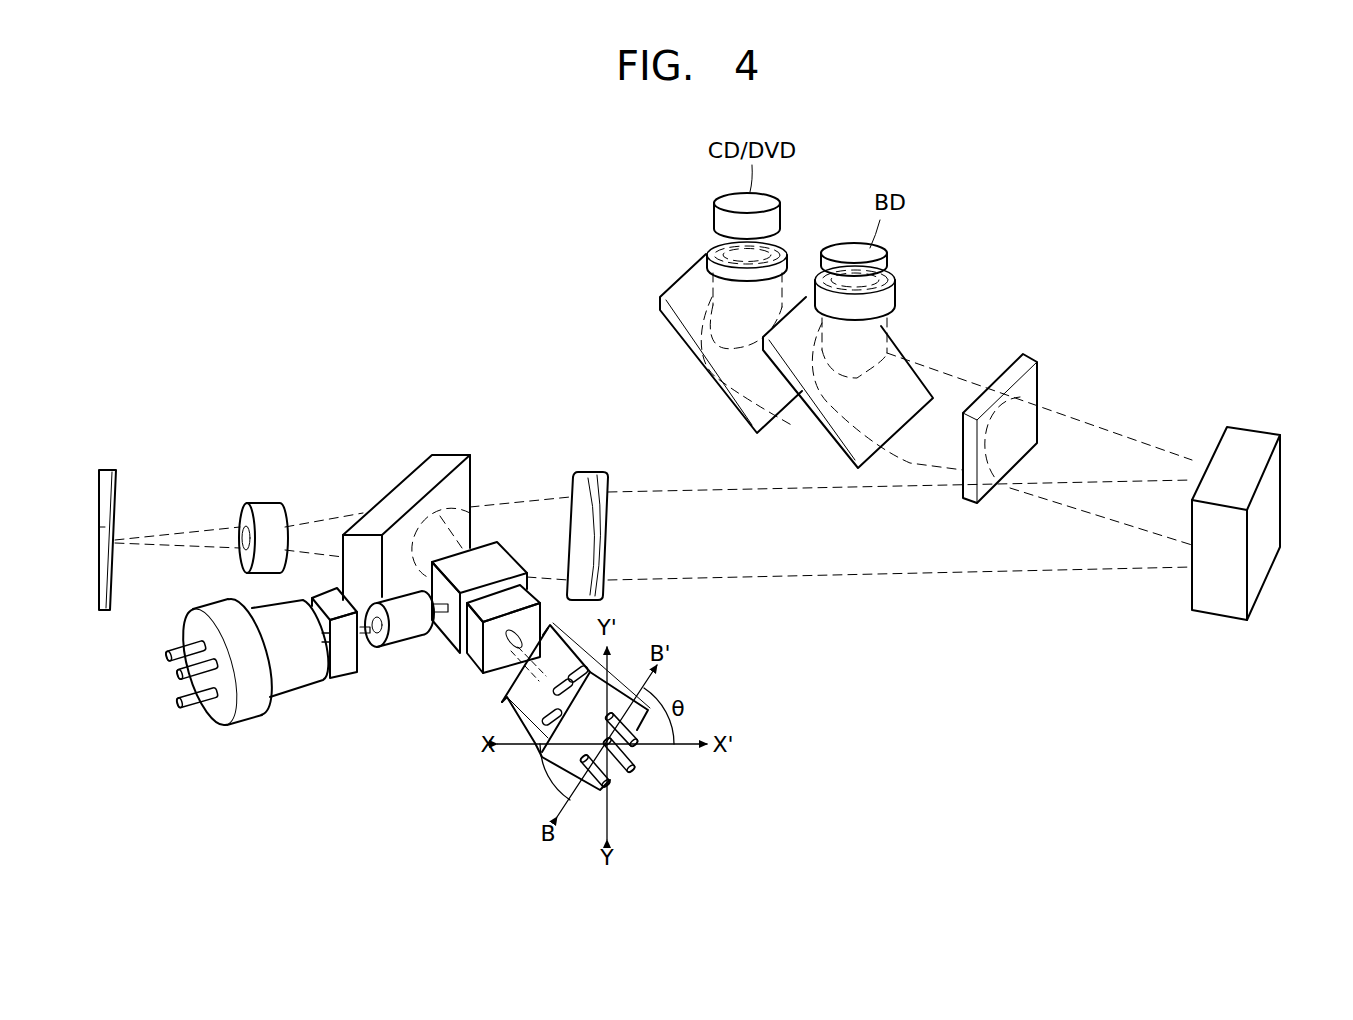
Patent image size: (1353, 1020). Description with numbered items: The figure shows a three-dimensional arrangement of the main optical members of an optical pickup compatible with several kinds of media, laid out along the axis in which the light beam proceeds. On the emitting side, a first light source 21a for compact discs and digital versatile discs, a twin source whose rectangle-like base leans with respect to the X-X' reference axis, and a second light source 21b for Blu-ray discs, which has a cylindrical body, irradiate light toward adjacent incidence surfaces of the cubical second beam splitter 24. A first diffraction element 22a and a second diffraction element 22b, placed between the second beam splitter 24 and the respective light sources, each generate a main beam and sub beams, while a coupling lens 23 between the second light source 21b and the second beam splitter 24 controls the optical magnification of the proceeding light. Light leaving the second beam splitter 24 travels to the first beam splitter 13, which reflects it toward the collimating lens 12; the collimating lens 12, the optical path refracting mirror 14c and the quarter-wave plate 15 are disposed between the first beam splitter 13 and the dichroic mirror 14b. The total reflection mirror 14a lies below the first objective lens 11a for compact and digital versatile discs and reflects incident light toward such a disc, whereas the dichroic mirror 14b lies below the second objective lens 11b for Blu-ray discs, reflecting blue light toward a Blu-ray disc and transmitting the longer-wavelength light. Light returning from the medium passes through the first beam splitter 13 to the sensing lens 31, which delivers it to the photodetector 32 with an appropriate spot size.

The first objective lens 11a is at (787, 248).
The second objective lens 11b is at (893, 290).
The collimating lens 12 is at (587, 478).
The first beam splitter 13 is at (445, 460).
The total reflection mirror 14a is at (680, 337).
The dichroic mirror 14b is at (828, 430).
The optical path refracting mirror 14c is at (1253, 437).
The quarter-wave plate 15 is at (1025, 358).
The first light source 21a is at (525, 772).
The second light source 21b is at (228, 745).
The first diffraction element 22a is at (473, 658).
The second diffraction element 22b is at (347, 676).
The coupling lens 23 is at (387, 642).
The second beam splitter 24 is at (448, 638).
The sensing lens 31 is at (267, 512).
The photodetector 32 is at (112, 470).